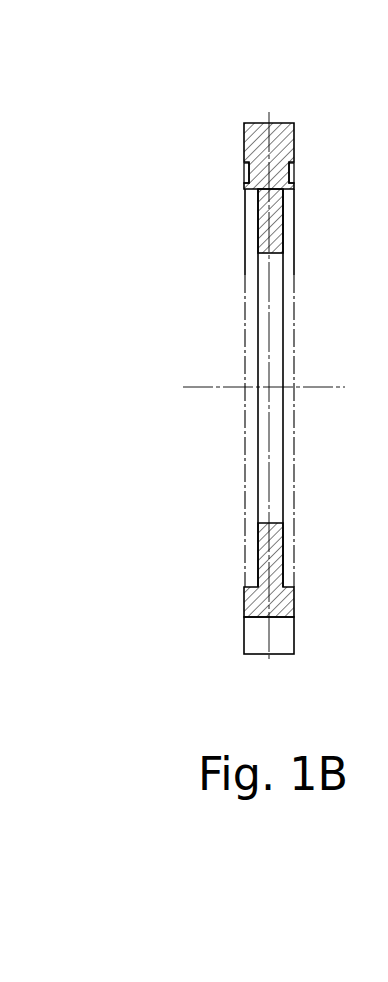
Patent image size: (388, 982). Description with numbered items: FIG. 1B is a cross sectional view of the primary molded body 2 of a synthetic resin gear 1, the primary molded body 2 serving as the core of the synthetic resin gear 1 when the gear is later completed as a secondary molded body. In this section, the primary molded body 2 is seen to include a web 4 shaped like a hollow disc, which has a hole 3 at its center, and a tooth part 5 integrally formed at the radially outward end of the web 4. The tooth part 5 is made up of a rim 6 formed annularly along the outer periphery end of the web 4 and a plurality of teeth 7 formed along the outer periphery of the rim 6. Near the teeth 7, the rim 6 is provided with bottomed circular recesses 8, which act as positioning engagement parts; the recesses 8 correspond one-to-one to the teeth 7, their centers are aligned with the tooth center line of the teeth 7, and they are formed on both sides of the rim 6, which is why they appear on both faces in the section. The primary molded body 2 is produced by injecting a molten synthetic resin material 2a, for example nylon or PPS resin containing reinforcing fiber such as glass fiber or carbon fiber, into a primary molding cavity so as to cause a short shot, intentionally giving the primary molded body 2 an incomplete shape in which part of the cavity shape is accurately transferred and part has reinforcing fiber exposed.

The synthetic resin gear 1 is at (309, 119).
The primary molded body 2 is at (292, 112).
The molten synthetic resin material 2a is at (309, 119).
The hole 3 is at (265, 256).
The web 4 is at (259, 223).
The tooth part 5 is at (215, 596).
The rim 6 is at (249, 597).
The teeth 7 is at (235, 642).
The recesses 8 is at (246, 166).